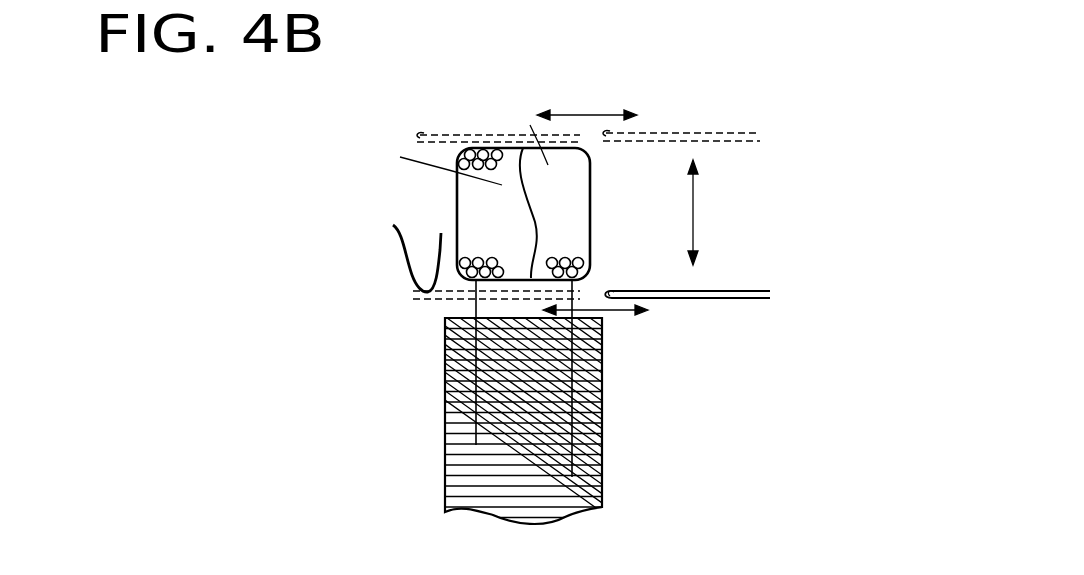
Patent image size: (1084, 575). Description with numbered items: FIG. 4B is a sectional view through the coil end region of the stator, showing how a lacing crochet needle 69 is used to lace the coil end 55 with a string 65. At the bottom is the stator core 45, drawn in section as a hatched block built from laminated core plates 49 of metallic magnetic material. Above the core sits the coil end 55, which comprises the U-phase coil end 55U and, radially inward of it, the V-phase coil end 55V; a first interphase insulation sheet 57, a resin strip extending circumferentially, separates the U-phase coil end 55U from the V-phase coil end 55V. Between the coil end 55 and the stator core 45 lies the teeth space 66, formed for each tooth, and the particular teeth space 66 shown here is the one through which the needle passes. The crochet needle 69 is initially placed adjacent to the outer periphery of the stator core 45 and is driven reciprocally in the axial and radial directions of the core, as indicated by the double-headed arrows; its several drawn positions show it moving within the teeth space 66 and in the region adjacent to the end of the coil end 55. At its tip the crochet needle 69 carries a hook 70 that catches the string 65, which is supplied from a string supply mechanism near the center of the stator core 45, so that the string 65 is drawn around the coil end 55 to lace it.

The stator core 45 is at (605, 421).
The core plate 49 is at (604, 482).
The coil end 55 is at (452, 192).
The U-phase coil end 55U is at (530, 125).
The V-phase coil end 55V is at (400, 157).
The first interphase insulation sheet 57 is at (522, 210).
The string 65 is at (400, 255).
The teeth space 66 is at (518, 300).
The lacing crochet needle 69 is at (478, 135).
The hook 70 is at (614, 290).